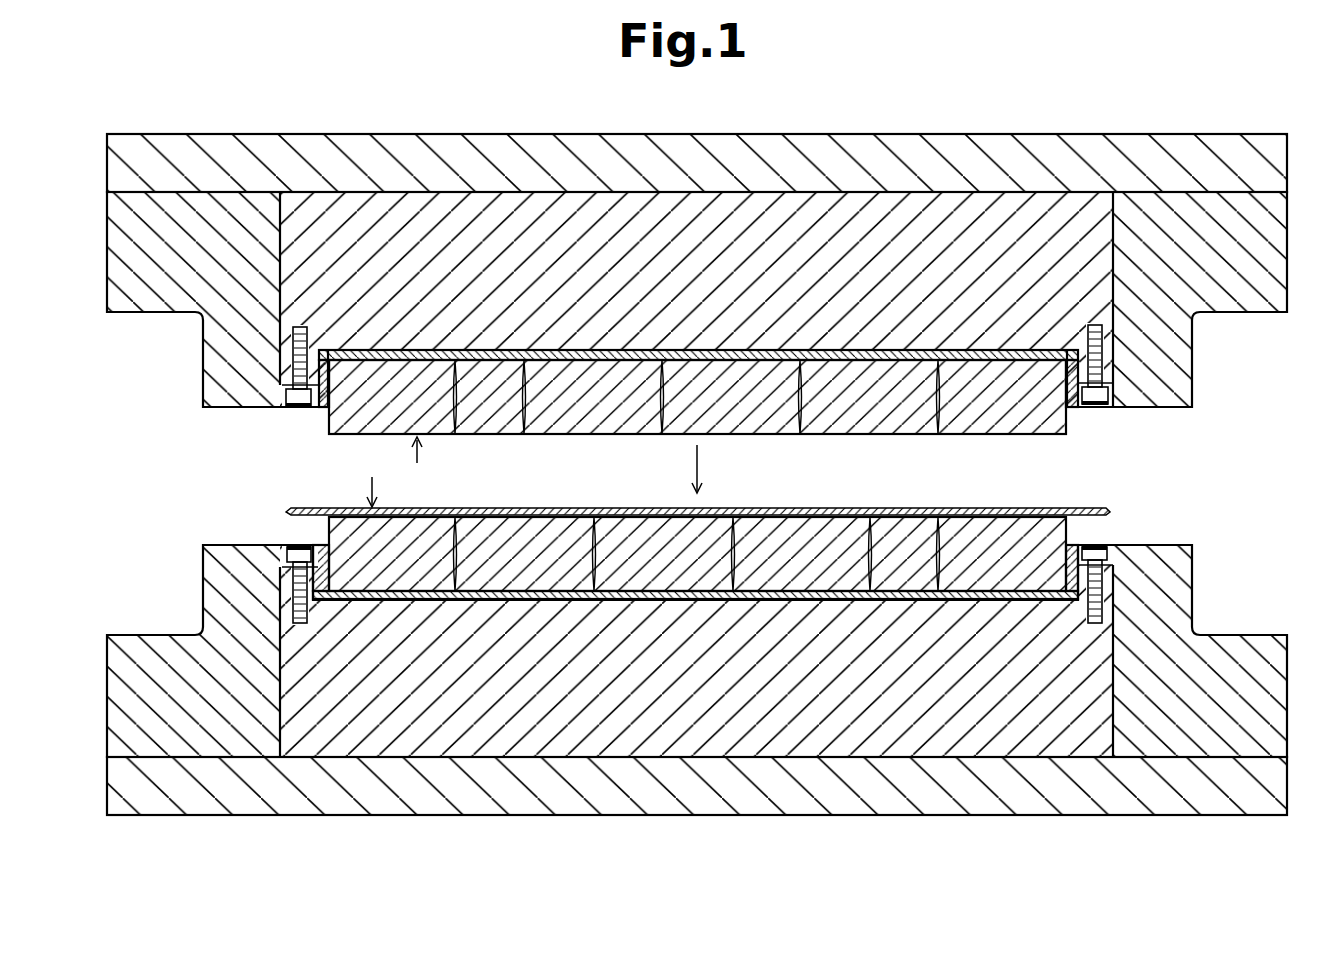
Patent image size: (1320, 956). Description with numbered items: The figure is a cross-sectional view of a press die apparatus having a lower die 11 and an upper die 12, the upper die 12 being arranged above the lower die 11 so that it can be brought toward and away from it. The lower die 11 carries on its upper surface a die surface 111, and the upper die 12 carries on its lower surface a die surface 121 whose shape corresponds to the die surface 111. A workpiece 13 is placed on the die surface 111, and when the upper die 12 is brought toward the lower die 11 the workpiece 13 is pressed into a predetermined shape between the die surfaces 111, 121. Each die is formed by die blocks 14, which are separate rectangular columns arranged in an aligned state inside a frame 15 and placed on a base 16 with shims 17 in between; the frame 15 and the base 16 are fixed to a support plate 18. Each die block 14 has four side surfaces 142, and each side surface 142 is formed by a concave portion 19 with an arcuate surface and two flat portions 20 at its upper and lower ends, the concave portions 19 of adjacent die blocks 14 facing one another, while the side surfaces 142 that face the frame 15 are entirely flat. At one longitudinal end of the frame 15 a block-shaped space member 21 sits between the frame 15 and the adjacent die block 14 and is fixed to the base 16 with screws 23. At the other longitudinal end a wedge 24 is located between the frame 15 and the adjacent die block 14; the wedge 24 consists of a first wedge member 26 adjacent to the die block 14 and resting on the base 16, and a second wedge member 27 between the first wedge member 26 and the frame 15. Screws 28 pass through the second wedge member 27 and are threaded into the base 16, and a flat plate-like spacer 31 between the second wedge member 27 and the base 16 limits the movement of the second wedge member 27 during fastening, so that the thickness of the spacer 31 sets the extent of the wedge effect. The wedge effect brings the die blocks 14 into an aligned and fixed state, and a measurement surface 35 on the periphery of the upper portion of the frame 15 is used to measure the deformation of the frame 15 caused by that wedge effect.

The lower die 11 is at (358, 472).
The upper die 12 is at (402, 498).
The workpiece 13 is at (524, 508).
The die block 14 is at (783, 437).
The frame 15 is at (203, 357).
The base 16 is at (631, 204).
The shim 17 is at (783, 348).
The support plate 18 is at (768, 142).
The concave portion 19 is at (454, 390).
The flat portion 20 is at (455, 360).
The space member 21 is at (1072, 350).
The screw 23 is at (1104, 338).
The wedge 24 is at (290, 408).
The first wedge member 26 is at (324, 350).
The second wedge member 27 is at (282, 390).
The screw 28 is at (292, 343).
The spacer 31 is at (313, 353).
The measurement surface 35 is at (1192, 355).
The die surface 111 is at (1040, 508).
The die surface 121 is at (958, 434).
The side surface 142 is at (326, 434).